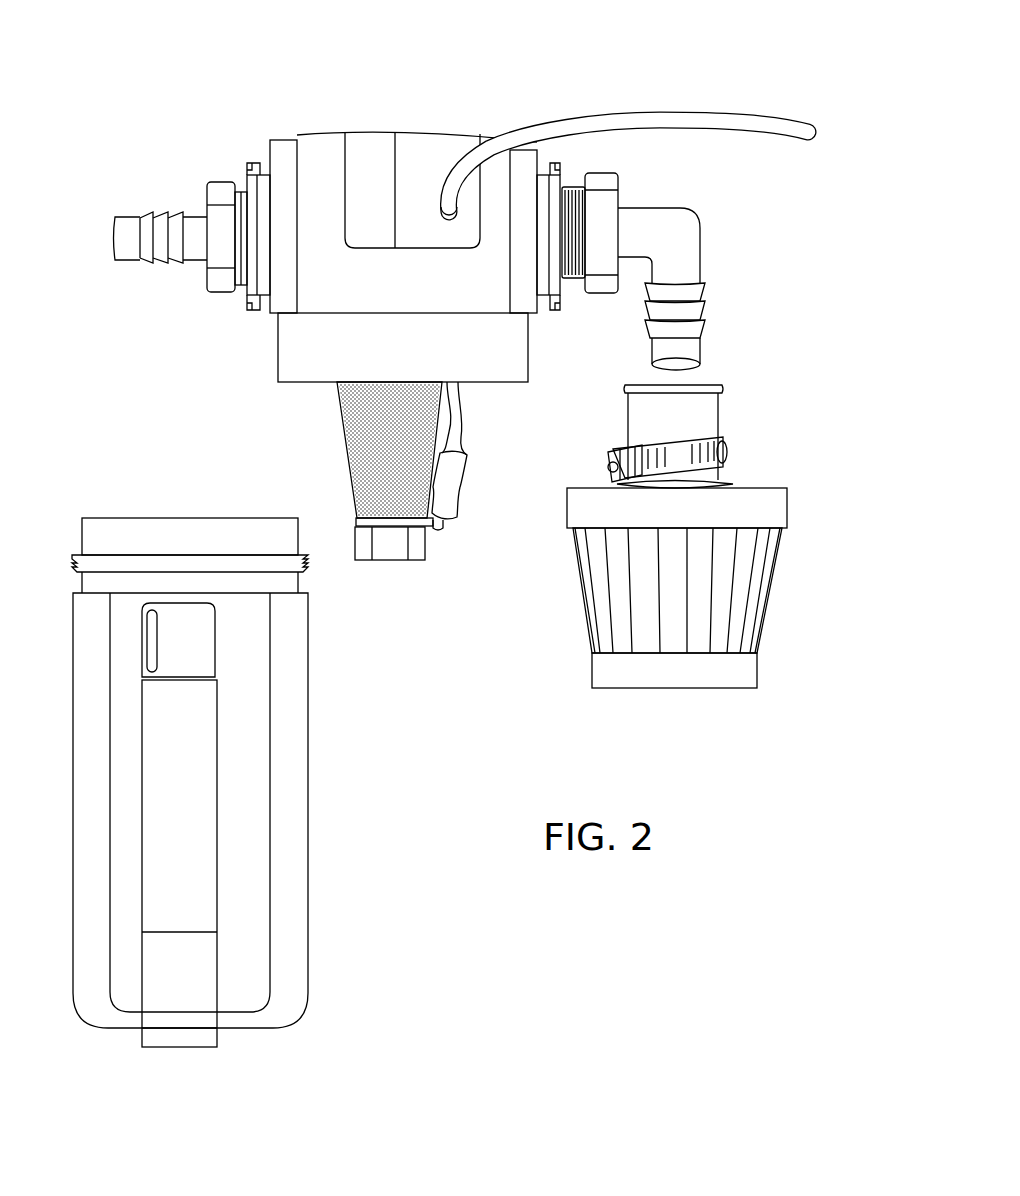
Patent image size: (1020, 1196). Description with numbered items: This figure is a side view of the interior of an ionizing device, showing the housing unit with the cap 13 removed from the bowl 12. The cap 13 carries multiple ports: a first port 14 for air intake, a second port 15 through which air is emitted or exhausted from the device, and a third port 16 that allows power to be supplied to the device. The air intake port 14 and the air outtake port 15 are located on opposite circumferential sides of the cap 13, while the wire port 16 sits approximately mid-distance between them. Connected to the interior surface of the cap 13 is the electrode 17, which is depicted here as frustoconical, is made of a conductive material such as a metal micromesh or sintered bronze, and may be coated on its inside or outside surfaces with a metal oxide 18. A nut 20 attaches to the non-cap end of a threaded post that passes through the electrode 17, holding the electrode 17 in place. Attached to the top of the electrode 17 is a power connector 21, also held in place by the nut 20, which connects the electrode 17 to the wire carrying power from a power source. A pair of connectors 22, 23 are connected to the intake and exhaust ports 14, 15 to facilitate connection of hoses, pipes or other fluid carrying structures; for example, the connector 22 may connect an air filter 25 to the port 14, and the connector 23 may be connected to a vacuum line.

The bowl 12 is at (307, 745).
The cap 13 is at (395, 133).
The first port 14 is at (563, 187).
The second port 15 is at (242, 192).
The third port 16 is at (443, 175).
The electrode 17 is at (338, 412).
The metal oxide 18 is at (374, 457).
The nut 20 is at (427, 544).
The power connector 21 is at (677, 112).
The connector 22 is at (700, 233).
The connector 23 is at (113, 258).
The air filter 25 is at (755, 600).